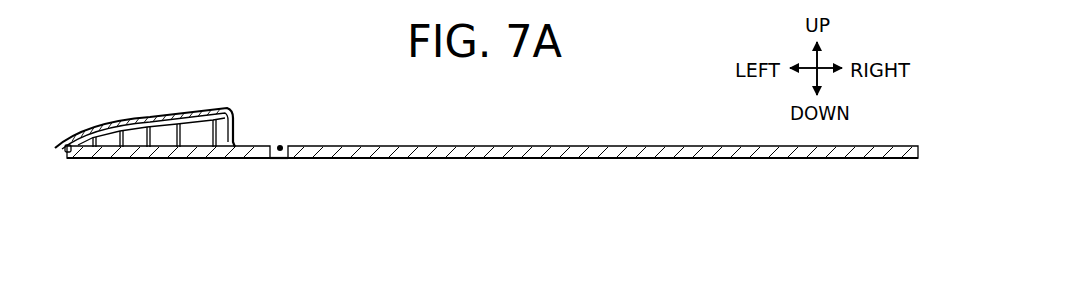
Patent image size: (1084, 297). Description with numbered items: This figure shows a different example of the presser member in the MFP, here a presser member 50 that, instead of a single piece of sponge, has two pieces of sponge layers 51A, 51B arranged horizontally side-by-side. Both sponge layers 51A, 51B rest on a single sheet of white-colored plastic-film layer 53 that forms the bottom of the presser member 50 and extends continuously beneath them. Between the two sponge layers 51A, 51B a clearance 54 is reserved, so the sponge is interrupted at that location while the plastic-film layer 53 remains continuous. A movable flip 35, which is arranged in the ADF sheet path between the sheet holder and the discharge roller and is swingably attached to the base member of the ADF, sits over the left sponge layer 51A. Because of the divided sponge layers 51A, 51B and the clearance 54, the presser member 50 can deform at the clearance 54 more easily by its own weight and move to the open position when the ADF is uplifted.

The movable flip 35 is at (160, 116).
The presser member 50 is at (491, 133).
The sponge layer 51A is at (250, 146).
The sponge layer 51B is at (358, 146).
The plastic-film layer 53 is at (280, 160).
The clearance 54 is at (281, 148).